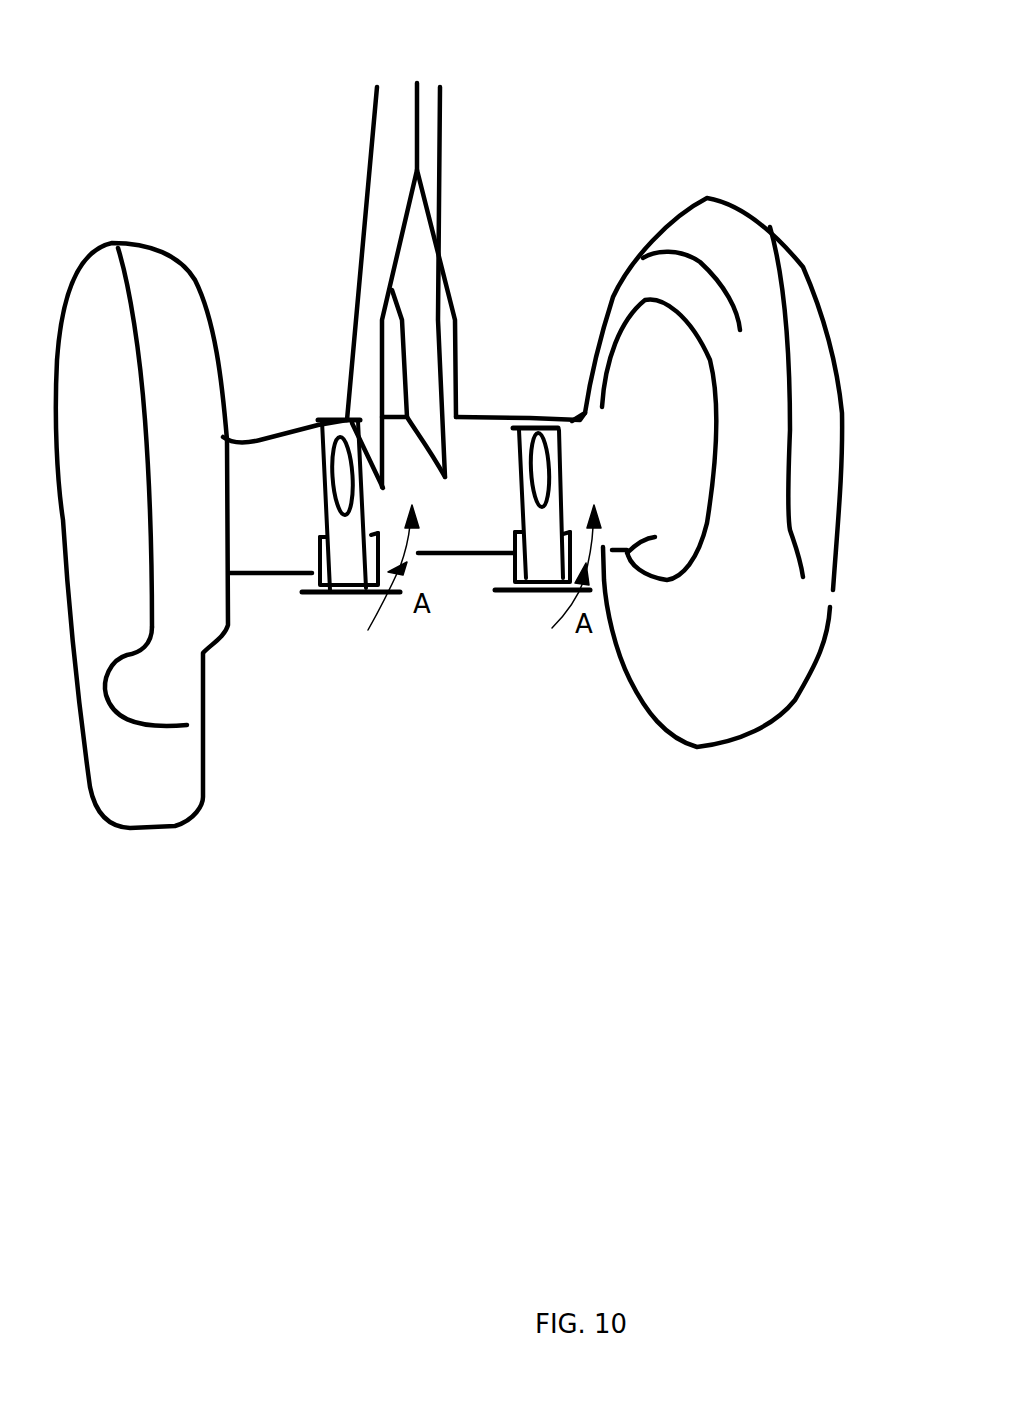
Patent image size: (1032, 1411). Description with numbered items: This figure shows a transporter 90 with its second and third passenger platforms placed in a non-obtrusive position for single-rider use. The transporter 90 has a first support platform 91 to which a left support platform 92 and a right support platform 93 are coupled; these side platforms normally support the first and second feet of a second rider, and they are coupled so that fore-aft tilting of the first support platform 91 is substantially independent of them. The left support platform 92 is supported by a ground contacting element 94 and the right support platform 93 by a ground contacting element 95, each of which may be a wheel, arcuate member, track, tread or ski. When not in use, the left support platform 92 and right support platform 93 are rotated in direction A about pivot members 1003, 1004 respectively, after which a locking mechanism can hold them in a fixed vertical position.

The transporter 90 is at (740, 105).
The first support platform 91 is at (317, 425).
The left support platform 92 is at (318, 593).
The right support platform 93 is at (553, 565).
The ground contacting element 94 is at (337, 485).
The ground contacting element 95 is at (541, 485).
The pivot member 1003 is at (333, 597).
The pivot member 1004 is at (497, 595).